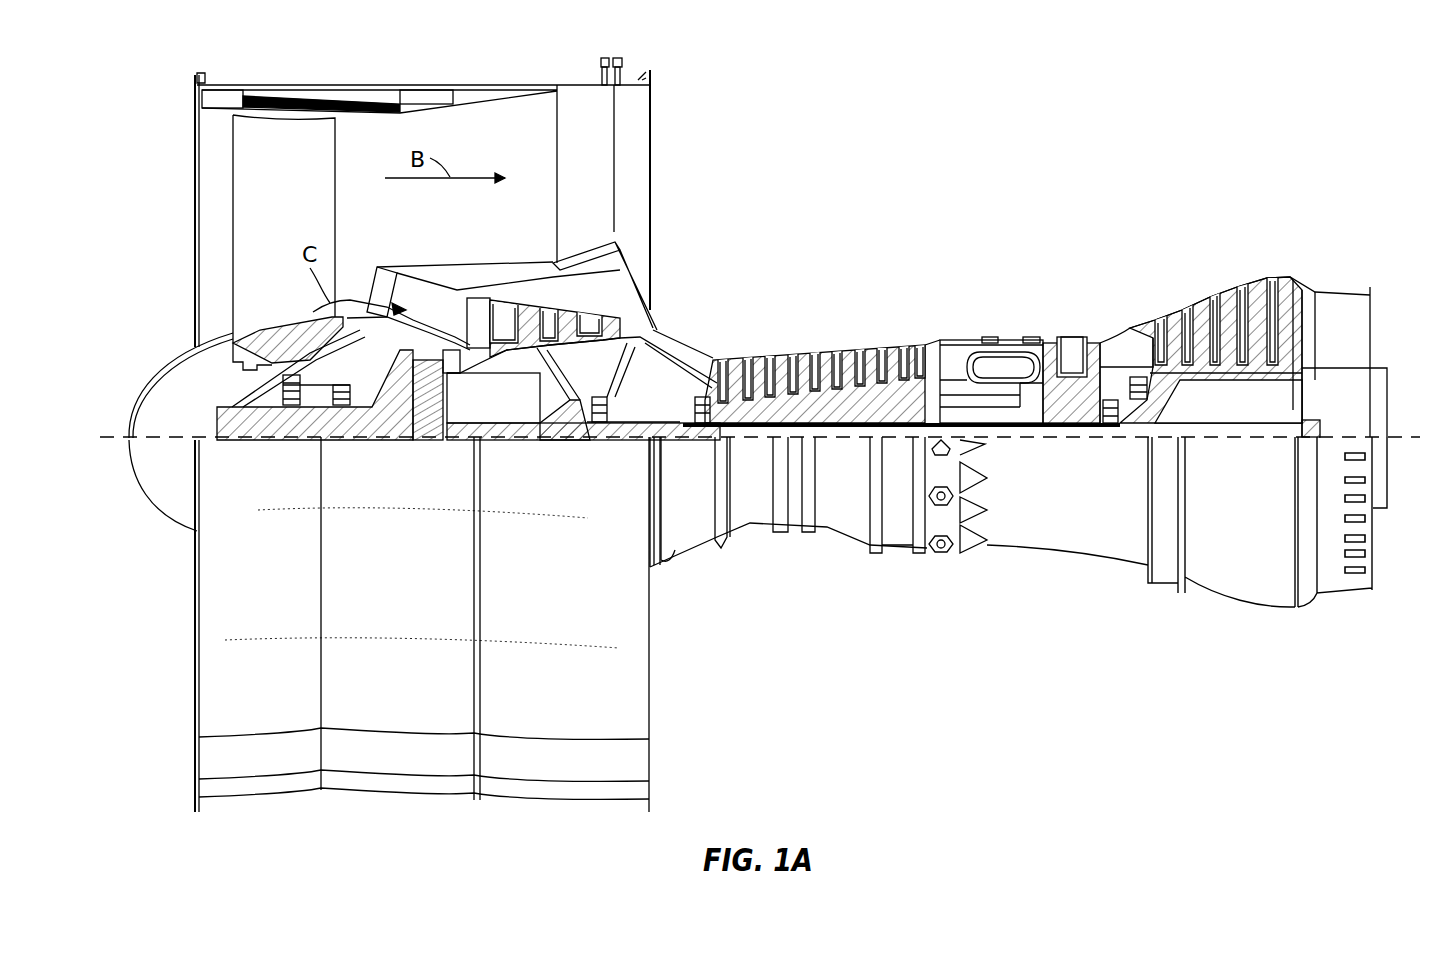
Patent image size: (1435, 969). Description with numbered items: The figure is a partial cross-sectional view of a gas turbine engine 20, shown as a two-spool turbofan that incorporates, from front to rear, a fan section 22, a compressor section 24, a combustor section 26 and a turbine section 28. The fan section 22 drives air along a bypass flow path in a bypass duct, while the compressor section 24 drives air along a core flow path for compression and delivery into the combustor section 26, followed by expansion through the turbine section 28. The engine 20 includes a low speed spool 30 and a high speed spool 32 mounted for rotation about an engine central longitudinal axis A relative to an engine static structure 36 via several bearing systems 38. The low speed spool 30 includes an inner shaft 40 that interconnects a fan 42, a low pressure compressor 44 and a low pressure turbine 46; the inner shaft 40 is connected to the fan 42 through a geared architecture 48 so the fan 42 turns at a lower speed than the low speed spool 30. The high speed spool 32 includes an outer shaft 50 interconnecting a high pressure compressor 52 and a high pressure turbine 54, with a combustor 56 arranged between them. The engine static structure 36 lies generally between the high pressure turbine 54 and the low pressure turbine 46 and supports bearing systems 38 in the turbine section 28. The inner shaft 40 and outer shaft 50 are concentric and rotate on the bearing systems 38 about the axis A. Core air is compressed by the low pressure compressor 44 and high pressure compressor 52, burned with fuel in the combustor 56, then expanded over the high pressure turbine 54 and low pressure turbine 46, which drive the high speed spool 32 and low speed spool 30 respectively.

The gas turbine engine 20 is at (1246, 97).
The fan section 22 is at (298, 84).
The compressor section 24 is at (818, 255).
The combustor section 26 is at (1008, 238).
The turbine section 28 is at (1154, 236).
The low speed spool 30 is at (862, 438).
The high speed spool 32 is at (905, 402).
The engine static structure 36 is at (902, 548).
The bearing systems 38 is at (292, 408).
The inner shaft 40 is at (667, 440).
The fan 42 is at (294, 224).
The low pressure compressor 44 is at (575, 328).
The low pressure turbine 46 is at (1240, 305).
The geared architecture 48 is at (425, 420).
The outer shaft 50 is at (1018, 437).
The high pressure compressor 52 is at (810, 405).
The high pressure turbine 54 is at (1072, 338).
The combustor 56 is at (995, 360).
The engine central longitudinal axis A is at (1405, 437).